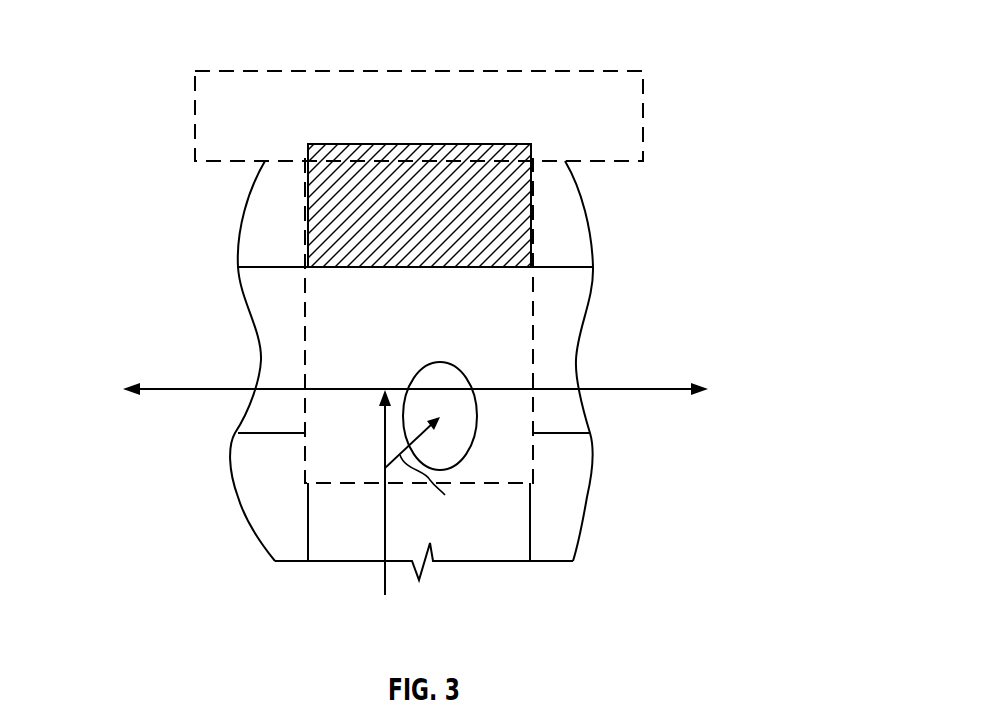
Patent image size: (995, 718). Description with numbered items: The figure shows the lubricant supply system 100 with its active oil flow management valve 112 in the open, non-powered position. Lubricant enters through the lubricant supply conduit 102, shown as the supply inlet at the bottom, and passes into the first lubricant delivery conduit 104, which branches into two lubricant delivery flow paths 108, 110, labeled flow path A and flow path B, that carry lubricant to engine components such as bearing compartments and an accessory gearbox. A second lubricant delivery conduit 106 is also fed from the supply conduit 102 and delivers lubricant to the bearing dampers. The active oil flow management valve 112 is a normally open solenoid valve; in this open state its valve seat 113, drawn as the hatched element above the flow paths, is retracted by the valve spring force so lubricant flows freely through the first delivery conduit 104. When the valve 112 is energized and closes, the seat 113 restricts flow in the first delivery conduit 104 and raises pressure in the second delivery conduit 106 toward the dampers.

The lubricant supply system 100 is at (115, 35).
The lubricant supply conduit 102 is at (362, 628).
The first lubricant delivery conduit 104 is at (243, 233).
The second lubricant delivery conduit 106 is at (440, 362).
The lubricant delivery flow path 108 is at (226, 389).
The lubricant delivery flow path 110 is at (613, 389).
The active oil flow management valve 112 is at (248, 70).
The valve seat 113 is at (531, 218).